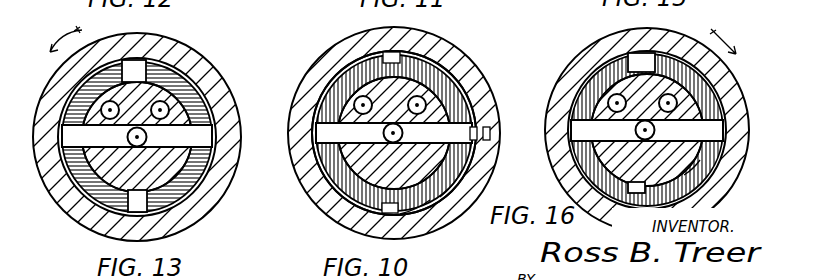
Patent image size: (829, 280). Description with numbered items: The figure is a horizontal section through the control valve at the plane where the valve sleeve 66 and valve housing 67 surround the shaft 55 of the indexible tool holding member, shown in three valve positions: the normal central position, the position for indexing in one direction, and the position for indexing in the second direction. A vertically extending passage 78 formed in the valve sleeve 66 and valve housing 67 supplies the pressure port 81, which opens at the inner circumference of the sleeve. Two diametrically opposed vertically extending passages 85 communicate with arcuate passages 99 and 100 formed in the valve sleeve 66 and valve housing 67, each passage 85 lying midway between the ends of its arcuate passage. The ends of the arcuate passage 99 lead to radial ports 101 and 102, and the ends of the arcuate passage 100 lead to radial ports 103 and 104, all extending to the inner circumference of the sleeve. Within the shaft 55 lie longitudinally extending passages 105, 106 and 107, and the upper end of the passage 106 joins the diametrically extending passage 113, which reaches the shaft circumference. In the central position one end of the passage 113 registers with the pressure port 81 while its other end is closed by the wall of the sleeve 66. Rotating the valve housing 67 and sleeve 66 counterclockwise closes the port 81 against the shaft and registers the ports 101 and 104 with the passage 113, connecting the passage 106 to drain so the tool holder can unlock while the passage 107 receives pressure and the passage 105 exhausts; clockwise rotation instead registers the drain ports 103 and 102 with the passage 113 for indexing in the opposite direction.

In FIG. 10, the shaft 55 is at (318, 147).
In FIG. 13, the valve sleeve 66 is at (160, 101).
In FIG. 10, the valve sleeve 66 is at (366, 84).
In FIG. 16, the valve sleeve 66 is at (606, 72).
In FIG. 16, the valve housing 67 is at (697, 50).
In FIG. 10, the vertically extending passage 78 is at (486, 119).
In FIG. 16, the vertically extending passage 78 is at (696, 182).
In FIG. 10, the port 81 is at (470, 127).
In FIG. 16, the port 81 is at (692, 163).
In FIG. 10, the vertically extending passages 85 is at (403, 32).
In FIG. 10, the arcuate passage 99 is at (428, 198).
In FIG. 16, the arcuate passage 100 is at (660, 66).
In FIG. 13, the radial port 101 is at (197, 132).
In FIG. 10, the radial port 101 is at (450, 182).
In FIG. 10, the radial port 102 is at (318, 189).
In FIG. 16, the radial port 102 is at (572, 82).
In FIG. 10, the radial port 103 is at (444, 50).
In FIG. 16, the radial port 103 is at (708, 132).
In FIG. 13, the radial port 104 is at (80, 140).
In FIG. 10, the radial port 104 is at (340, 86).
In FIG. 13, the longitudinally extending passage 105 is at (85, 110).
In FIG. 10, the longitudinally extending passage 105 is at (320, 100).
In FIG. 13, the longitudinally extending passage 106 is at (64, 167).
In FIG. 10, the longitudinally extending passage 106 is at (322, 114).
In FIG. 13, the longitudinally extending passage 107 is at (160, 105).
In FIG. 10, the longitudinally extending passage 107 is at (466, 74).
In FIG. 13, the diametrically extending passage 113 is at (97, 148).
In FIG. 10, the diametrically extending passage 113 is at (474, 91).
In FIG. 16, the diametrically extending passage 113 is at (722, 90).